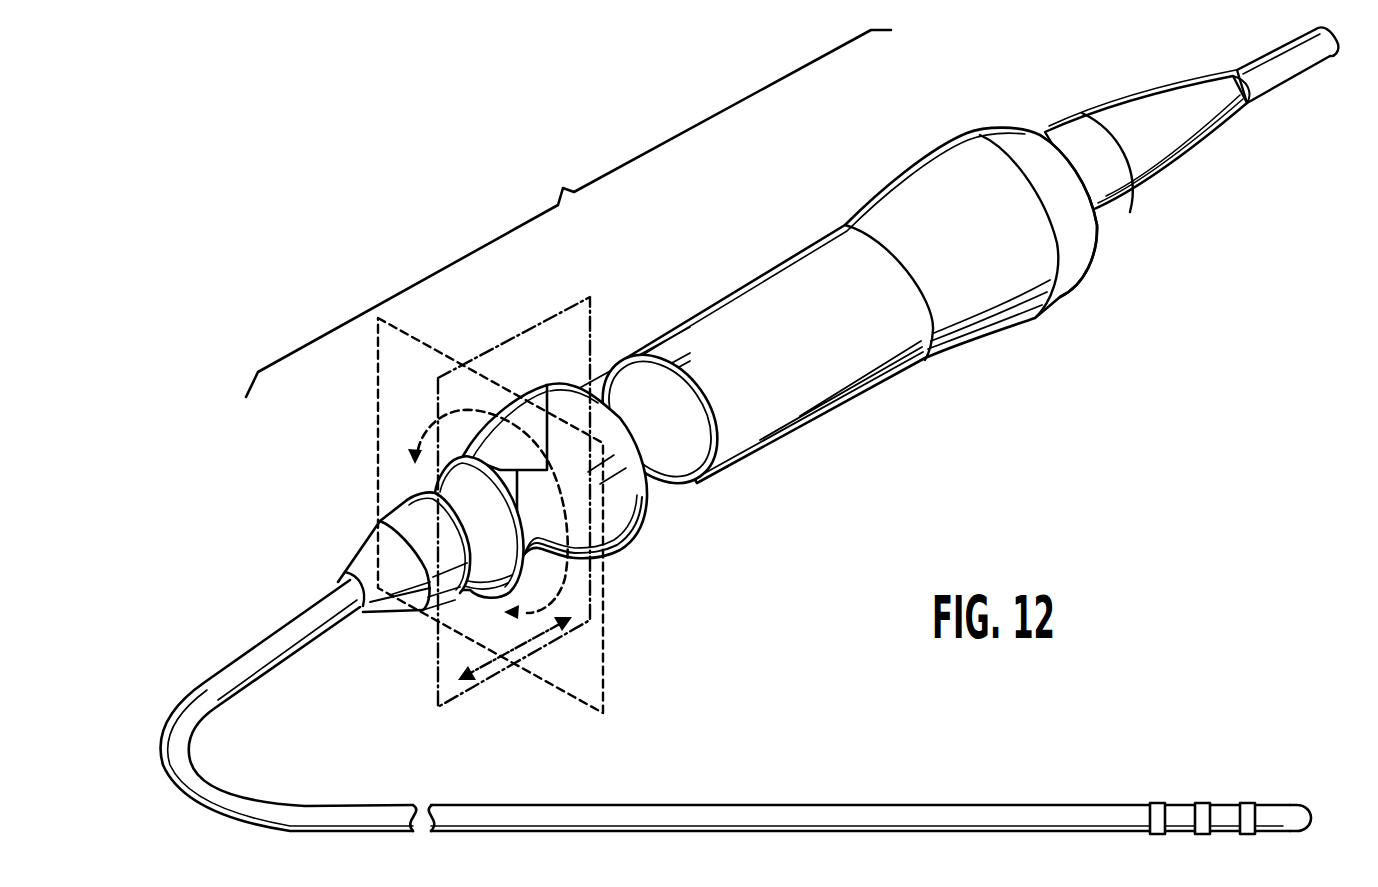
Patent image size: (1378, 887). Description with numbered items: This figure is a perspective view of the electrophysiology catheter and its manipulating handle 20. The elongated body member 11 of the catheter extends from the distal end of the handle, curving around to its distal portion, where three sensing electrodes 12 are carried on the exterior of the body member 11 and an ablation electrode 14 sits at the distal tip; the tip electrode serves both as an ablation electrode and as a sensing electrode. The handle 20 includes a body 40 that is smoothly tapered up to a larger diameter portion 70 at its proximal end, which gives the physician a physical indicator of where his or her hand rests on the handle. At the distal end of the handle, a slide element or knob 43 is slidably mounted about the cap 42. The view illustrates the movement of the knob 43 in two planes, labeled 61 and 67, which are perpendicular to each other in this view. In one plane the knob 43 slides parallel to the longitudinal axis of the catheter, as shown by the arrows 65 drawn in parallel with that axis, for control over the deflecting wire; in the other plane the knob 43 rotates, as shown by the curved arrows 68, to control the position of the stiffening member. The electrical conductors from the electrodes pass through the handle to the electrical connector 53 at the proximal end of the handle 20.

The body member 11 is at (718, 804).
The sensing electrodes 12 is at (1245, 803).
The ablation electrode 14 is at (1297, 810).
The manipulating handle 20 is at (568, 213).
The body 40 is at (838, 385).
The cap 42 is at (367, 553).
The slide element 43 is at (640, 522).
The electrical connector 53 is at (1168, 182).
The first reference plane 61 is at (460, 697).
The arrows 65 is at (500, 648).
The second reference plane 67 is at (605, 673).
The curved arrows 68 is at (593, 590).
The larger diameter portion 70 is at (1079, 263).